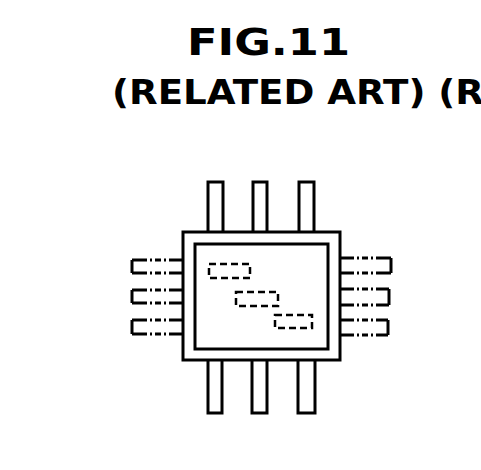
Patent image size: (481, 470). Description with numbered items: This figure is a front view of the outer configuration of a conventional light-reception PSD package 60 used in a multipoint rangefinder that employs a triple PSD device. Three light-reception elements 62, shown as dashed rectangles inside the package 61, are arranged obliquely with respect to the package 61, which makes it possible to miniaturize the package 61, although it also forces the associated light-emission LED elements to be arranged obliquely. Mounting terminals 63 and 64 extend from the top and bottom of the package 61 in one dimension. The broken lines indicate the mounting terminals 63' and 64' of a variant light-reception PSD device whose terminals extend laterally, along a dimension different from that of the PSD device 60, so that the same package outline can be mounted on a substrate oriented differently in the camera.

The PSD package 60 is at (180, 230).
The package 61 is at (200, 250).
The light-reception elements 62 is at (280, 329).
The mounting terminals 63 is at (302, 197).
The mounting terminals 63' is at (392, 322).
The mounting terminals 64 is at (306, 398).
The mounting terminals 64' is at (110, 297).